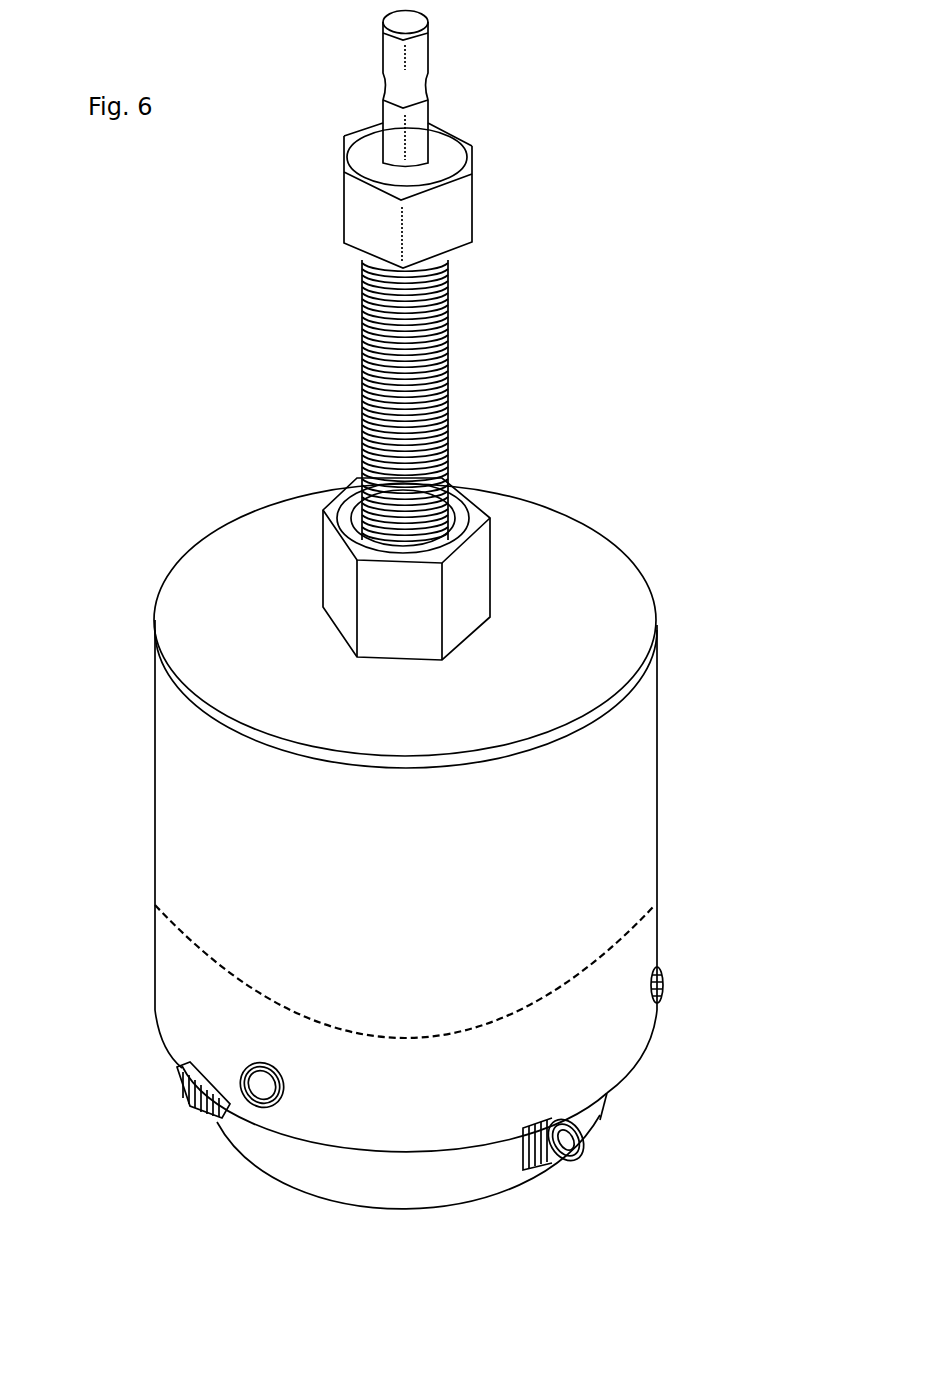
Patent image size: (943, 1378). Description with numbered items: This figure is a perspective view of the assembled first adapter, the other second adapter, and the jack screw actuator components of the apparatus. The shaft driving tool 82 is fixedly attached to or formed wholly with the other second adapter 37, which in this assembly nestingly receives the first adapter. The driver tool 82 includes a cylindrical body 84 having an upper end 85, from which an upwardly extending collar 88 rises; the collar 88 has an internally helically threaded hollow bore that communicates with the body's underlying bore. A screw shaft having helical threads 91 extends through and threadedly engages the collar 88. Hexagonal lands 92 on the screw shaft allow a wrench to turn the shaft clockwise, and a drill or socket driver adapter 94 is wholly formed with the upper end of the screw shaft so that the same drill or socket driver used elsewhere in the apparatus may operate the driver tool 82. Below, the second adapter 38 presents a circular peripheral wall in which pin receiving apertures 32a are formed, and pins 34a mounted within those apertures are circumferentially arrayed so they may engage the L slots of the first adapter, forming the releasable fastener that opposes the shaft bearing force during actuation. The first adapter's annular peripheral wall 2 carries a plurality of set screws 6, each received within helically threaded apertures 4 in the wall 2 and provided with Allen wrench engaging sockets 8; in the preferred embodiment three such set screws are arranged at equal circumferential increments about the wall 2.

The drill or socket driver adapter 94 is at (421, 117).
The hexagonal lands 92 is at (373, 217).
The helical threads 91 is at (372, 365).
The shaft driving tool 82 is at (574, 492).
The collar 88 is at (342, 578).
The upper end 85 is at (565, 598).
The cylindrical body 84 is at (625, 818).
The other second adapter 37 is at (153, 984).
The pin receiving apertures 32a is at (662, 1003).
The second adapter 38 is at (623, 1053).
The pins 34a is at (260, 1090).
The set screws 6 is at (193, 1112).
The annular peripheral wall 2 is at (392, 1185).
The helically threaded apertures 4 is at (535, 1168).
The Allen wrench engaging sockets 8 is at (585, 1148).